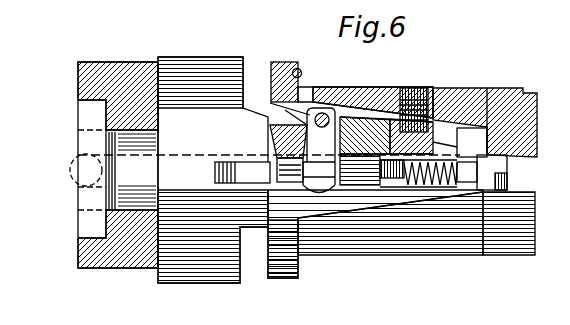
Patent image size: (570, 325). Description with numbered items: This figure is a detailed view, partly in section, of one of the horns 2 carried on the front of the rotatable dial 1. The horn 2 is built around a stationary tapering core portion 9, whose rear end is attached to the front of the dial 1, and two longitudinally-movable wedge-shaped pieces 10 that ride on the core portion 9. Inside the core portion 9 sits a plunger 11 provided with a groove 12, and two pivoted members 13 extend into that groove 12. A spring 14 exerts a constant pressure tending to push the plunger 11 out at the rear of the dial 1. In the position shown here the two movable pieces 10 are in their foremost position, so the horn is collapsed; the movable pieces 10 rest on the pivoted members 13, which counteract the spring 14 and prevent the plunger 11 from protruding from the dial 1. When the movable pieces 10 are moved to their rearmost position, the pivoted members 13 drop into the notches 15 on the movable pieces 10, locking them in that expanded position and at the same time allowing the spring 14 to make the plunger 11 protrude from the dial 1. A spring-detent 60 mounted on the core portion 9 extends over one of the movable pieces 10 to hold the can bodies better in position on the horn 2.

The rotatable dial 1 is at (90, 165).
The horn 2 is at (346, 180).
The core portion 9 is at (392, 88).
The movable pieces 10 is at (517, 84).
The plunger 11 is at (280, 62).
The groove 12 is at (297, 188).
The pivoted members 13 is at (320, 196).
The spring 14 is at (388, 190).
The notches 15 is at (342, 88).
The spring-detent 60 is at (304, 84).